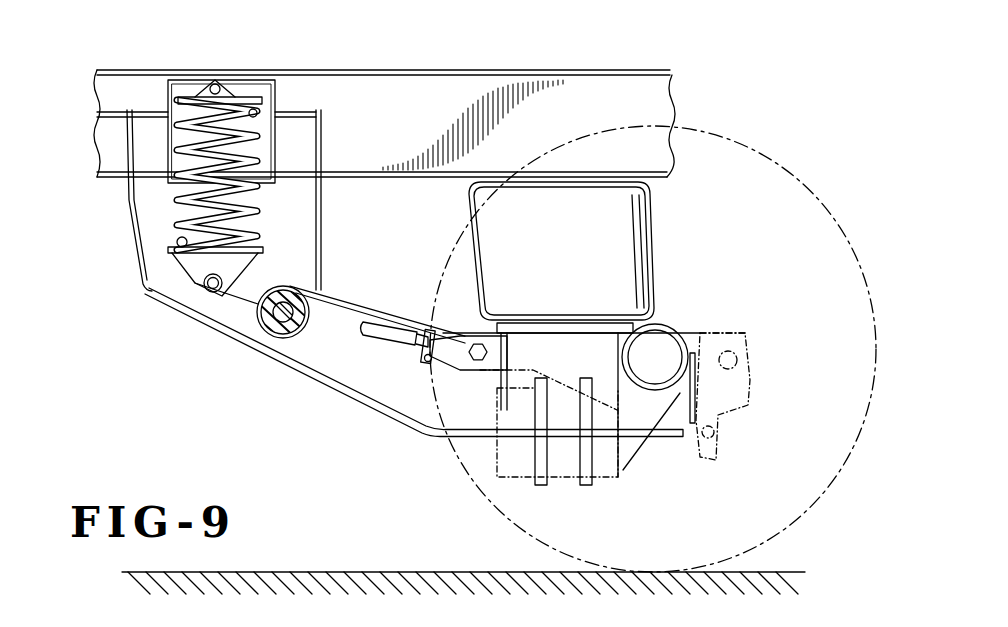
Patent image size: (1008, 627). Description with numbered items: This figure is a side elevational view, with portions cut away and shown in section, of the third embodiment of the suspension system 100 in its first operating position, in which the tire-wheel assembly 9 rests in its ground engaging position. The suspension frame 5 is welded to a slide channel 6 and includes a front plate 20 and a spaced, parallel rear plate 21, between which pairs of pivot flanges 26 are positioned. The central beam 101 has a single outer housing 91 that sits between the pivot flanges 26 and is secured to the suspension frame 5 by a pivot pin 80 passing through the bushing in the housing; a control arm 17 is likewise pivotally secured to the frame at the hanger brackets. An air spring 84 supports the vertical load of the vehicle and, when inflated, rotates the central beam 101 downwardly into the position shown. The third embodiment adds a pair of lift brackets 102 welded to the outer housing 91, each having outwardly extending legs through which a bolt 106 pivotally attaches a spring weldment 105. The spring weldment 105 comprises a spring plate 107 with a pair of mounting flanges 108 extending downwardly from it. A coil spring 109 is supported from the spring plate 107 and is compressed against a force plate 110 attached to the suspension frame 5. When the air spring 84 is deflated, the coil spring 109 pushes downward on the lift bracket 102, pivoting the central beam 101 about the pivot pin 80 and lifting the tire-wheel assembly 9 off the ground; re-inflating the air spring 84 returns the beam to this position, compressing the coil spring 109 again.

The suspension frame 5 is at (113, 196).
The slide channel 6 is at (654, 112).
The tire-wheel assembly 9 is at (779, 163).
The control arm 17 is at (401, 333).
The front plate 20 is at (145, 250).
The rear plate 21 is at (319, 268).
The pivot flange 26 is at (286, 243).
The pivot pin 80 is at (300, 343).
The air spring 84 is at (620, 263).
The outer housing 91 is at (280, 318).
The suspension system 100 is at (192, 395).
The central beam 101 is at (372, 412).
The lift bracket 102 is at (246, 312).
The spring weldment 105 is at (170, 268).
The bolt 106 is at (236, 303).
The spring plate 107 is at (178, 244).
The mounting flange 108 is at (203, 286).
The coil spring 109 is at (256, 223).
The force plate 110 is at (195, 100).